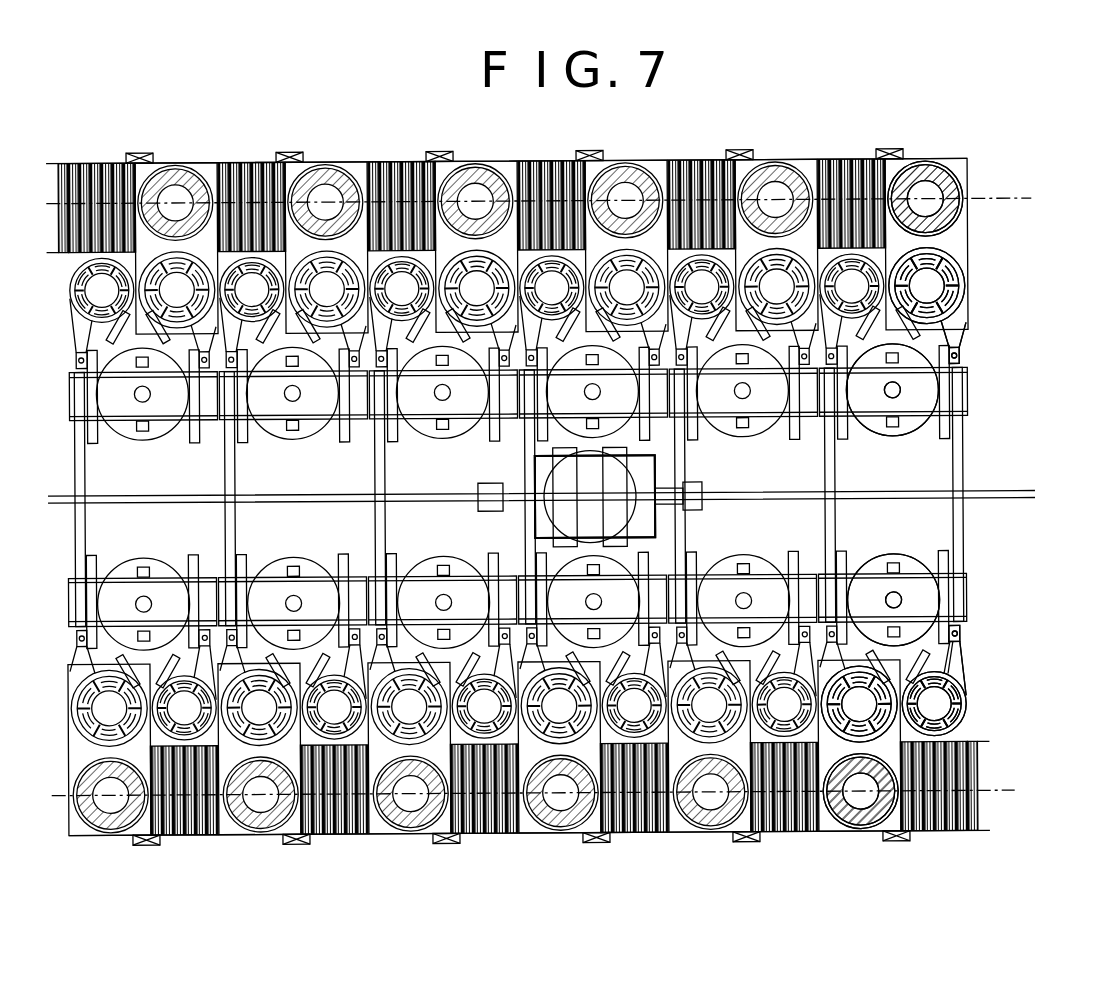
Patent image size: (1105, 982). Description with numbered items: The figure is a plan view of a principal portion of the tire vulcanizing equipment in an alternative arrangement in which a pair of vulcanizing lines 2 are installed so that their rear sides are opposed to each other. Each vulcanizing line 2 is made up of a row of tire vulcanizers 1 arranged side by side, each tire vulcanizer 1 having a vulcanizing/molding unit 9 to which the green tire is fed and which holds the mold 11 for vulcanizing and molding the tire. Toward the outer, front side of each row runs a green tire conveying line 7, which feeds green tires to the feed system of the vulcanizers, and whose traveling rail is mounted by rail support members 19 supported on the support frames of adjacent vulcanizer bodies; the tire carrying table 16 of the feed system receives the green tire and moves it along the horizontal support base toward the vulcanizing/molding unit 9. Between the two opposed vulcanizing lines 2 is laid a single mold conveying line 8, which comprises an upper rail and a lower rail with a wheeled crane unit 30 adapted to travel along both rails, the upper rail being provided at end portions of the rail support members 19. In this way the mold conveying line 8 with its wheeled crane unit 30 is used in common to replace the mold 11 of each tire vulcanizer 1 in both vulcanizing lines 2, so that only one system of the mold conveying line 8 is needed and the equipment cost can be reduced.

The tire vulcanizer 1 is at (971, 351).
The vulcanizing line 2 is at (988, 266).
The green tire conveying line 7 is at (1013, 190).
The mold conveying line 8 is at (988, 482).
The vulcanizing/molding unit 9 is at (905, 421).
The mold 11 is at (617, 520).
The tire carrying table 16 is at (937, 176).
The rail support member 19 is at (832, 527).
The wheeled crane unit 30 is at (663, 473).